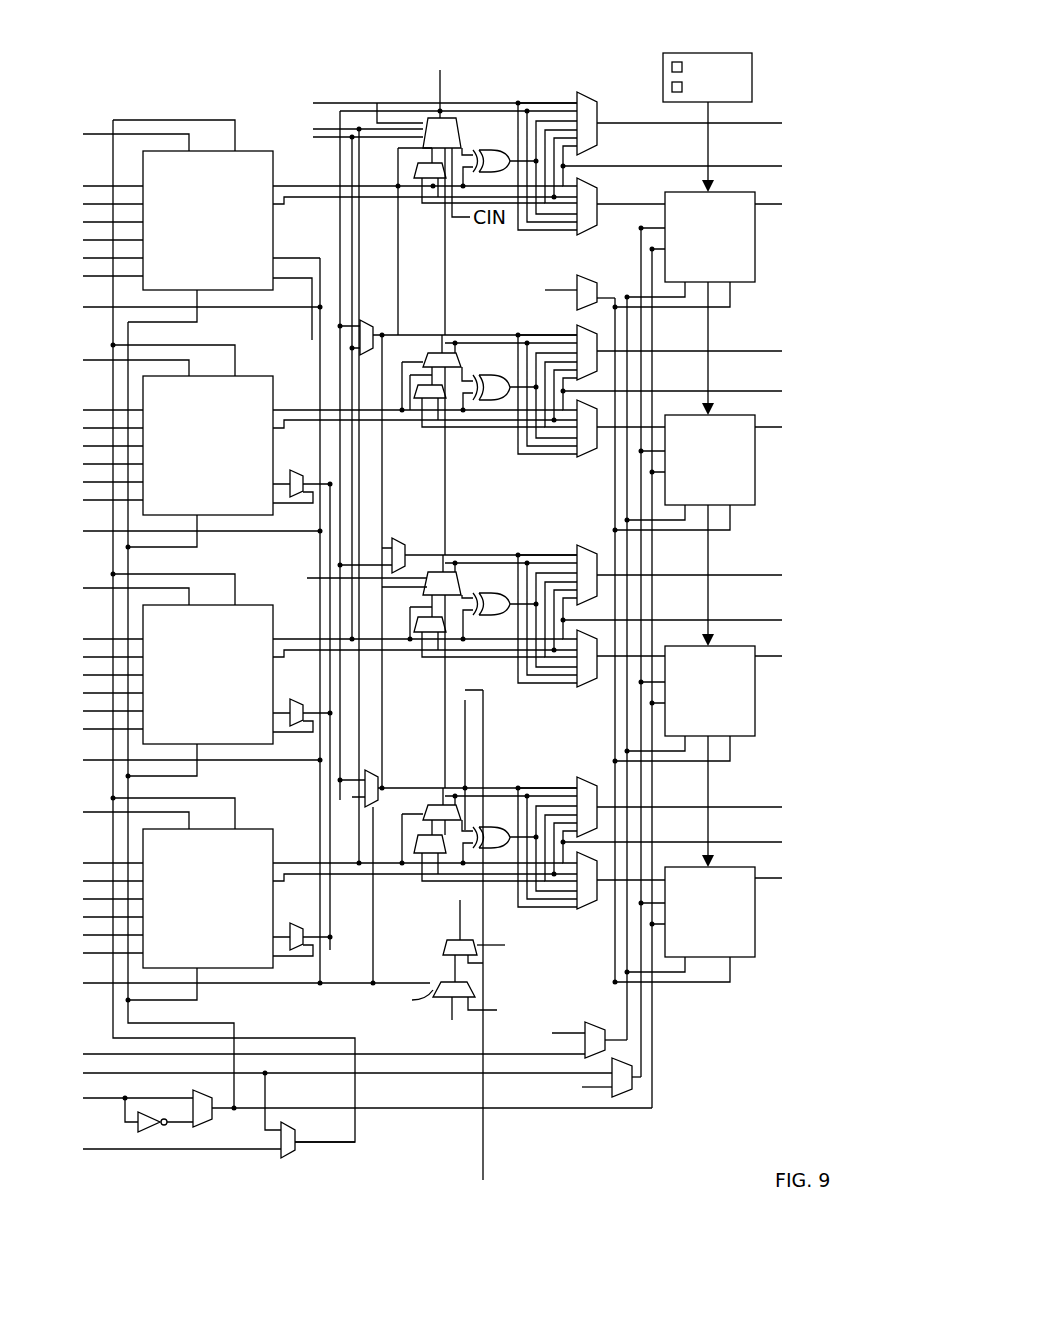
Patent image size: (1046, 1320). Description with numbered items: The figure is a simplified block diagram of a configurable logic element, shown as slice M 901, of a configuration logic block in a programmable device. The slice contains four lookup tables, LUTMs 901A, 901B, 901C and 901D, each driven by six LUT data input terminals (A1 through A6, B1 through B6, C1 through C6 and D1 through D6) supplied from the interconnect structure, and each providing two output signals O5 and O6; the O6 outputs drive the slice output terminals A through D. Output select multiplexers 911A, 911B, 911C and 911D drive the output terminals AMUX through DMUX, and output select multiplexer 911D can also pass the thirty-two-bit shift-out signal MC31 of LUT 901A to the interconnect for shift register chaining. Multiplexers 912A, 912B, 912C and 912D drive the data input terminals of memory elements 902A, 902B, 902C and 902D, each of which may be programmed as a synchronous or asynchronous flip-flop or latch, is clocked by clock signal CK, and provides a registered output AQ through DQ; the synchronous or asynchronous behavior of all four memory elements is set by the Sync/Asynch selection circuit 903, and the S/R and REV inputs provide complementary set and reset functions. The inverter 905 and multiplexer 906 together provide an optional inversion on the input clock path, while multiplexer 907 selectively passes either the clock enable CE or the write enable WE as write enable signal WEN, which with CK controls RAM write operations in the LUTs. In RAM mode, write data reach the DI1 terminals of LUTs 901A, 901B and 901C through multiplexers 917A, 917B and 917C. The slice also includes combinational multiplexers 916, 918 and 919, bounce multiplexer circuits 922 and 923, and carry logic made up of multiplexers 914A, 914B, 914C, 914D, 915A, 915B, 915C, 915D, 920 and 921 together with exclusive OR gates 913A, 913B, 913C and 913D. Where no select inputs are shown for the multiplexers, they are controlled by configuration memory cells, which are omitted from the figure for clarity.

The slice M 901 is at (162, 100).
The lookup table (LUTM) 901D is at (353, 245).
The lookup table (LUTM) 901C is at (353, 445).
The lookup table (LUTM) 901B is at (353, 674).
The lookup table (LUTM) 901A is at (353, 898).
The memory element 902D is at (684, 251).
The memory element 902C is at (684, 474).
The memory element 902B is at (684, 705).
The memory element 902A is at (684, 926).
The Sync/Asynch selection circuit 903 is at (663, 95).
The inverter 905 is at (148, 1135).
The multiplexer 906 is at (210, 1120).
The multiplexer 907 is at (288, 1158).
The output select multiplexer 911D is at (598, 128).
The output select multiplexer 911C is at (578, 328).
The output select multiplexer 911B is at (578, 550).
The output select multiplexer 911A is at (578, 781).
The multiplexer 912D is at (598, 198).
The multiplexer 912C is at (590, 457).
The multiplexer 912B is at (590, 687).
The multiplexer 912A is at (590, 909).
The exclusive OR gate 913D is at (492, 148).
The exclusive OR gate 913C is at (490, 375).
The exclusive OR gate 913B is at (490, 593).
The exclusive OR gate 913A is at (492, 827).
The multiplexer 914D is at (450, 118).
The multiplexer 914C is at (437, 353).
The multiplexer 914B is at (437, 572).
The multiplexer 914A is at (437, 805).
The multiplexer 915D is at (420, 178).
The multiplexer 915C is at (440, 398).
The multiplexer 915B is at (440, 632).
The multiplexer 915A is at (440, 853).
The combinational multiplexer 916 is at (366, 320).
The multiplexer 917C is at (297, 497).
The multiplexer 917B is at (297, 726).
The multiplexer 917A is at (297, 950).
The combinational multiplexer 918 is at (390, 547).
The combinational multiplexer 919 is at (370, 807).
The multiplexer 920 is at (470, 983).
The multiplexer 921 is at (583, 275).
The bounce multiplexer circuit 922 is at (592, 1024).
The bounce multiplexer circuit 923 is at (620, 1097).